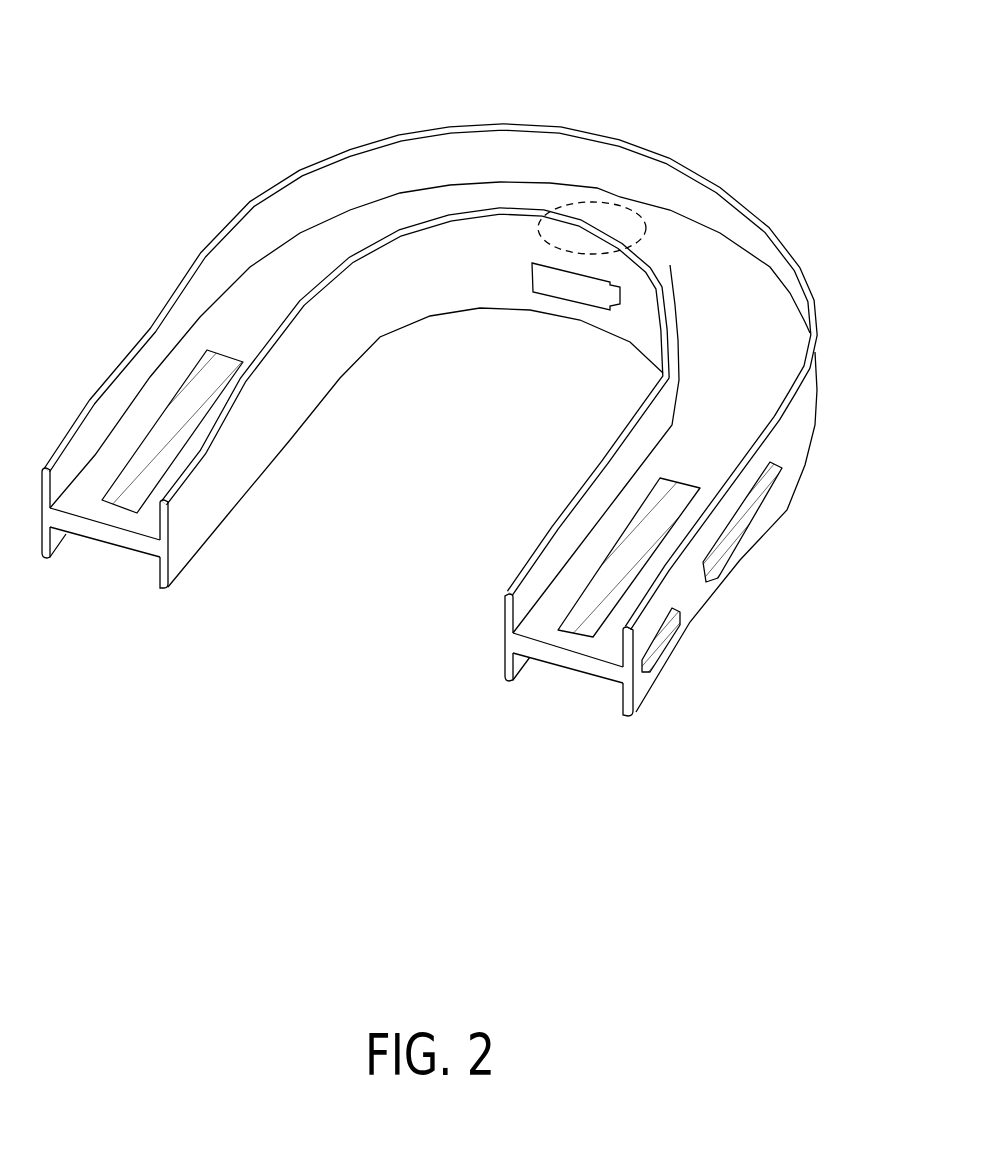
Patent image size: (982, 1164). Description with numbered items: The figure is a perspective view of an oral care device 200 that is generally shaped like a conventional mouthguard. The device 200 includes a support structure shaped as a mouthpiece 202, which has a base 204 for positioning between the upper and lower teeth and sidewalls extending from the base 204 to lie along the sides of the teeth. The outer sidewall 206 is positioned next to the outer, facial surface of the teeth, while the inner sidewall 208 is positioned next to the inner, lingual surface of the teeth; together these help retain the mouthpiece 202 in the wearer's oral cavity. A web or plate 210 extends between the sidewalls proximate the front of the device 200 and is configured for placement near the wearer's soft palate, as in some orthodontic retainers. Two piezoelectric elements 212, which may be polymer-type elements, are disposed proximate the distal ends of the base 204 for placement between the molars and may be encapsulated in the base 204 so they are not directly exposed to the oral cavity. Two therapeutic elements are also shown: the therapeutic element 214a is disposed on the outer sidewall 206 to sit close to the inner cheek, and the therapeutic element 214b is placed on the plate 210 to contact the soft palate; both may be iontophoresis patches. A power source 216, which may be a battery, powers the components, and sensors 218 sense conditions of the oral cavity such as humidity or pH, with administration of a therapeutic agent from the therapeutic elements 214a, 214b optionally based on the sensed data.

The oral care device 200 is at (462, 411).
The mouthpiece 202 is at (462, 464).
The base 204 is at (240, 313).
The outer sidewall 206 is at (802, 420).
The inner sidewall 208 is at (248, 432).
The web or plate 210 is at (735, 293).
The piezoelectric elements 212 is at (585, 623).
The therapeutic element 214a is at (743, 527).
The therapeutic element 214b is at (592, 230).
The power source 216 is at (663, 640).
The sensors 218 is at (575, 287).